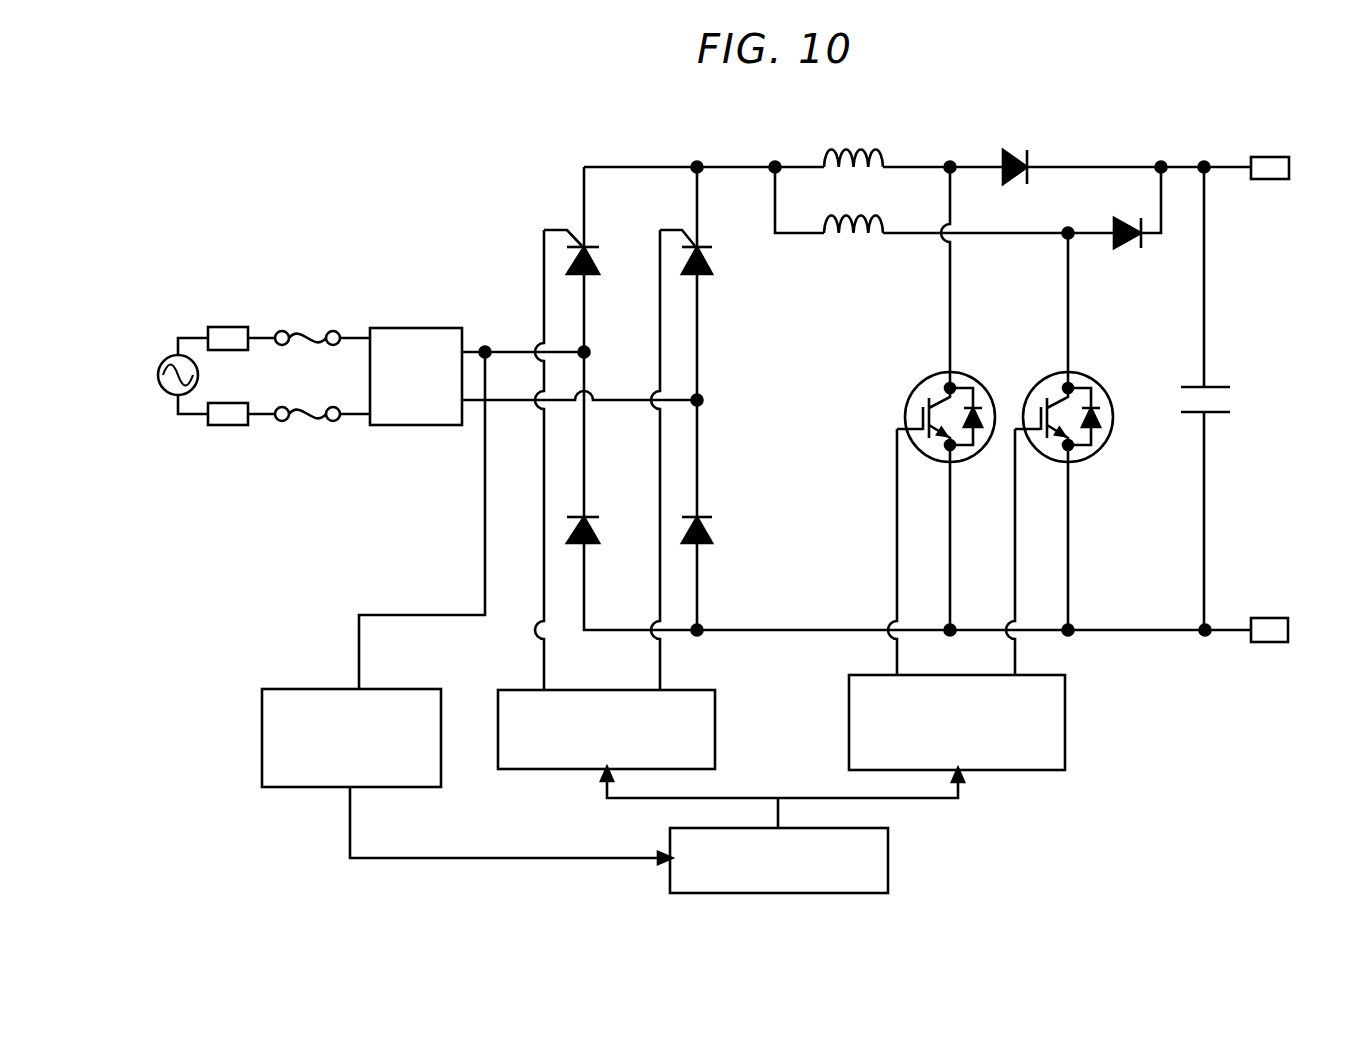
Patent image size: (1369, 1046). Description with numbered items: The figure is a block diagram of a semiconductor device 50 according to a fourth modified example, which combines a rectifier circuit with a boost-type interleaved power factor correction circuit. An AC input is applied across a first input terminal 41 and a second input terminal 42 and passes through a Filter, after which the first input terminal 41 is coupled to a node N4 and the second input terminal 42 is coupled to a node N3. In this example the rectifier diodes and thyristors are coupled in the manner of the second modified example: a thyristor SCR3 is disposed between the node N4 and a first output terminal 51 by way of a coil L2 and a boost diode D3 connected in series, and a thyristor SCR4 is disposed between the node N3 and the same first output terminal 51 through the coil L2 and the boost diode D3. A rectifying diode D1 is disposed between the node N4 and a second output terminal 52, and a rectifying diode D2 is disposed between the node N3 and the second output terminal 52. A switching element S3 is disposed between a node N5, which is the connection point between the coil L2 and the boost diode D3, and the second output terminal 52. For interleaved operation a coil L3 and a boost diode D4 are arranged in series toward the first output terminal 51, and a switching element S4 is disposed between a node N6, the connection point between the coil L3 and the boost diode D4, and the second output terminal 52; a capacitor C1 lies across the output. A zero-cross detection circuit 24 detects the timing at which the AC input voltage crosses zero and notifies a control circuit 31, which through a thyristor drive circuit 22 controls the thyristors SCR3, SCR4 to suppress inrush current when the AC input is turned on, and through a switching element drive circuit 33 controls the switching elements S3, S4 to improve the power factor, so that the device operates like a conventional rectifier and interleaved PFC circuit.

The semiconductor device 50 is at (466, 195).
The first input terminal 41 is at (238, 327).
The second input terminal 42 is at (230, 425).
The first output terminal 51 is at (1270, 180).
The second output terminal 52 is at (1270, 641).
The zero-cross detection circuit 24 is at (392, 689).
The thyristor drive circuit 22 is at (715, 724).
The switching element drive circuit 33 is at (1065, 718).
The control circuit 31 is at (888, 858).
The thyristor SCR3 is at (597, 274).
The thyristor SCR4 is at (710, 274).
The rectifying diode D1 is at (590, 543).
The rectifying diode D2 is at (703, 543).
The boost diode D3 is at (1008, 150).
The boost diode D4 is at (1120, 250).
The coil L2 is at (868, 145).
The coil L3 is at (848, 240).
The node N3 is at (700, 398).
The node N4 is at (590, 352).
The node N5 is at (953, 162).
The node N6 is at (1073, 225).
The switching element S3 is at (963, 378).
The switching element S4 is at (1081, 378).
The capacitor C1 is at (1223, 400).